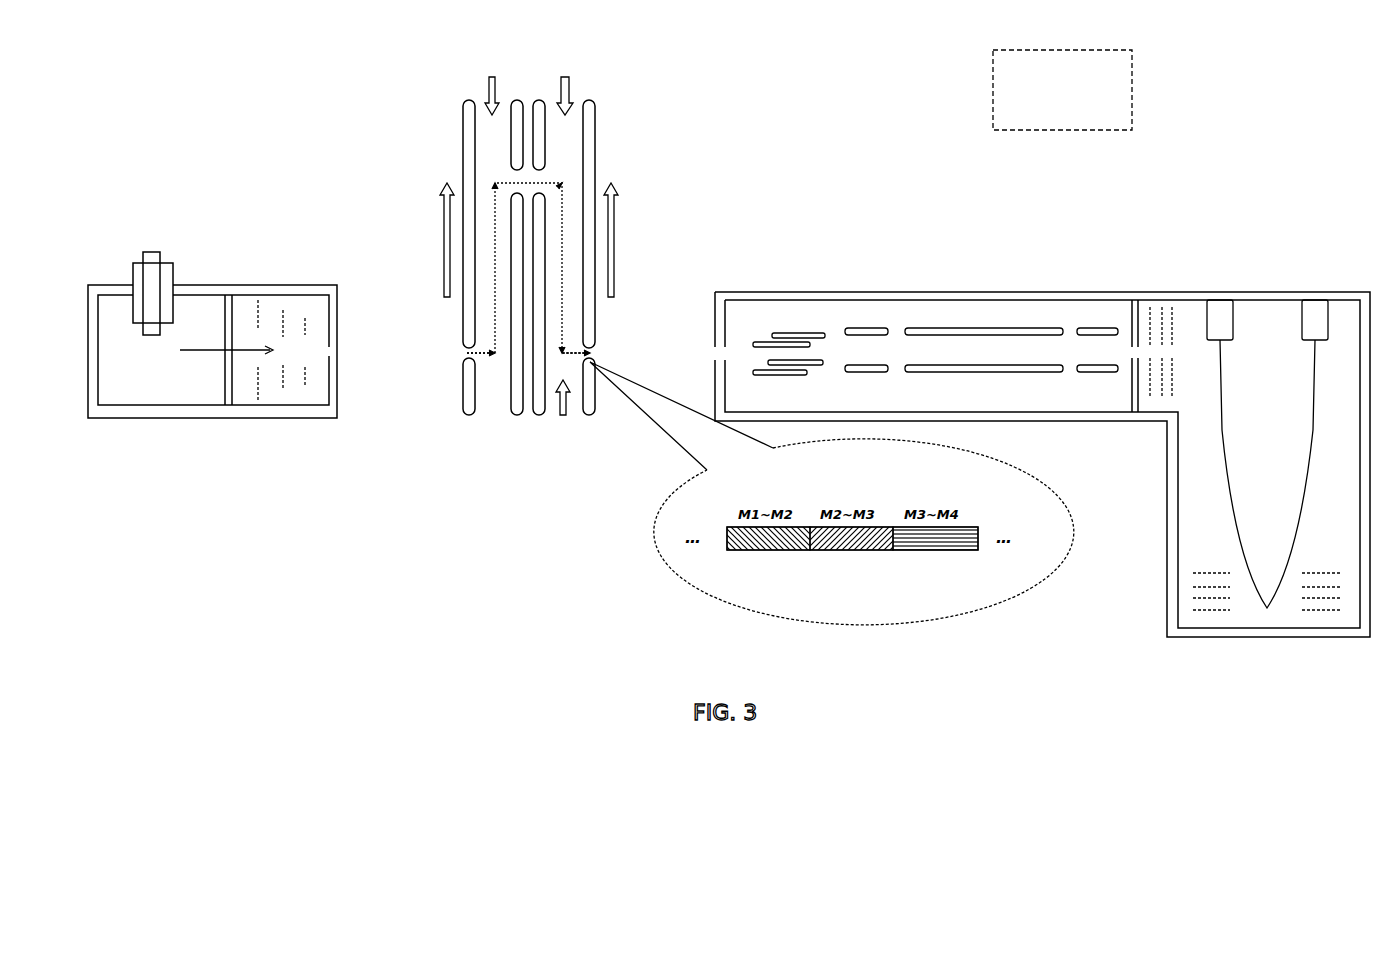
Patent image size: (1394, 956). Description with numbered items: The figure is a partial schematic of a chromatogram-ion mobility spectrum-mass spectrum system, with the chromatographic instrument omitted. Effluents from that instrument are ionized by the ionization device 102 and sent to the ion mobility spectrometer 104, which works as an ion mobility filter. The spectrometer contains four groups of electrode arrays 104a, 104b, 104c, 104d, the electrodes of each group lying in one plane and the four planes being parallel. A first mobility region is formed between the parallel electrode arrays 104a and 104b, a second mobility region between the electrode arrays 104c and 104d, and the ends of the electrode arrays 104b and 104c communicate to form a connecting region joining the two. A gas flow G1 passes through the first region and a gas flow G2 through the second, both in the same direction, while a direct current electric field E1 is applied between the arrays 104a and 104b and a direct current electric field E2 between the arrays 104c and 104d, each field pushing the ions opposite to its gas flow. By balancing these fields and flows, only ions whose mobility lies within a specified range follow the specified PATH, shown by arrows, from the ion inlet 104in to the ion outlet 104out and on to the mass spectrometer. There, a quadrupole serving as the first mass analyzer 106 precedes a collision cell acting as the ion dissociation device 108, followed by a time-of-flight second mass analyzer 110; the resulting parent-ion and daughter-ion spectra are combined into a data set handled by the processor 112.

The ionization device 102 is at (177, 273).
The ion mobility spectrometer 104 is at (545, 276).
The electrode array 104a is at (462, 435).
The electrode array 104b is at (511, 435).
The electrode array 104c is at (540, 434).
The electrode array 104d is at (593, 434).
The ion inlet 104in is at (467, 353).
The ion outlet 104out is at (587, 353).
The first mass analyzer 106 is at (800, 311).
The ion dissociation device 108 is at (990, 304).
The second mass analyzer 110 is at (1269, 291).
The processor 112 is at (1085, 123).
The gas flow G1 is at (495, 81).
The gas flow G2 is at (565, 81).
The direct current electric field E1 is at (426, 240).
The direct current electric field E2 is at (629, 240).
The specified path PATH is at (563, 198).